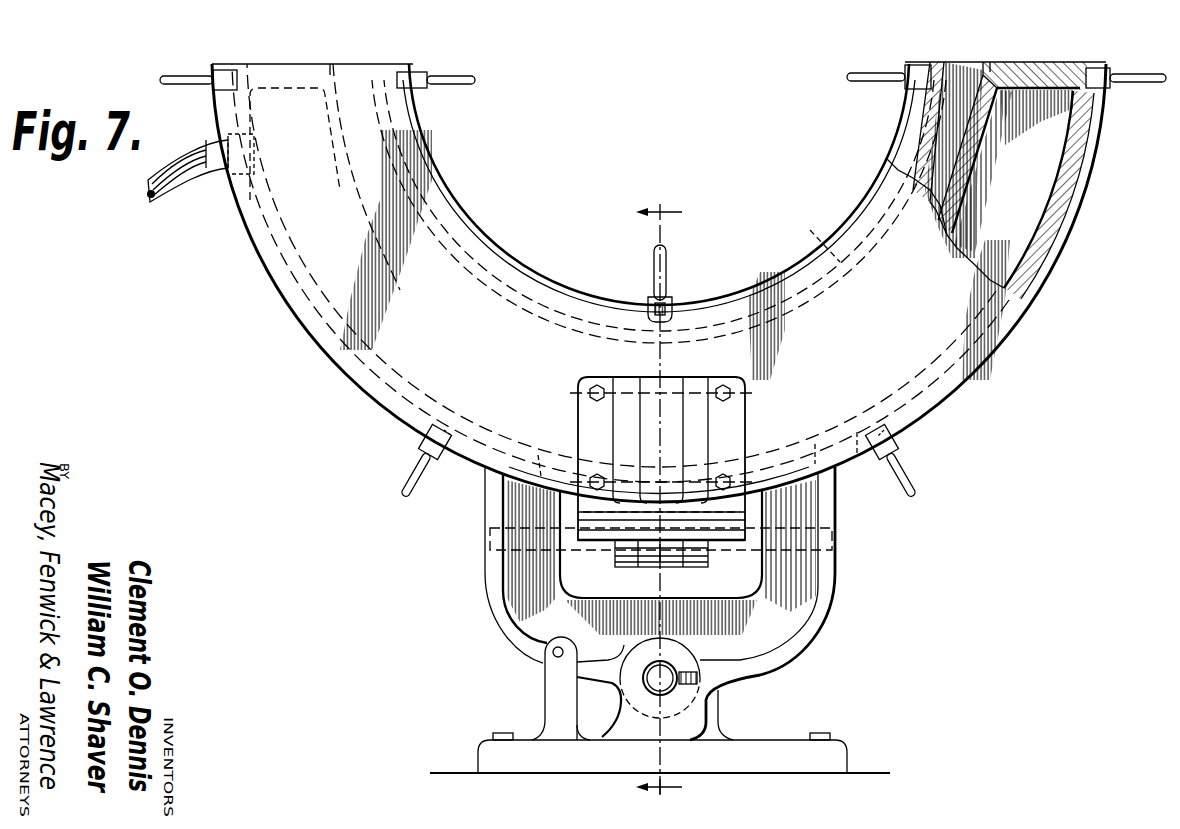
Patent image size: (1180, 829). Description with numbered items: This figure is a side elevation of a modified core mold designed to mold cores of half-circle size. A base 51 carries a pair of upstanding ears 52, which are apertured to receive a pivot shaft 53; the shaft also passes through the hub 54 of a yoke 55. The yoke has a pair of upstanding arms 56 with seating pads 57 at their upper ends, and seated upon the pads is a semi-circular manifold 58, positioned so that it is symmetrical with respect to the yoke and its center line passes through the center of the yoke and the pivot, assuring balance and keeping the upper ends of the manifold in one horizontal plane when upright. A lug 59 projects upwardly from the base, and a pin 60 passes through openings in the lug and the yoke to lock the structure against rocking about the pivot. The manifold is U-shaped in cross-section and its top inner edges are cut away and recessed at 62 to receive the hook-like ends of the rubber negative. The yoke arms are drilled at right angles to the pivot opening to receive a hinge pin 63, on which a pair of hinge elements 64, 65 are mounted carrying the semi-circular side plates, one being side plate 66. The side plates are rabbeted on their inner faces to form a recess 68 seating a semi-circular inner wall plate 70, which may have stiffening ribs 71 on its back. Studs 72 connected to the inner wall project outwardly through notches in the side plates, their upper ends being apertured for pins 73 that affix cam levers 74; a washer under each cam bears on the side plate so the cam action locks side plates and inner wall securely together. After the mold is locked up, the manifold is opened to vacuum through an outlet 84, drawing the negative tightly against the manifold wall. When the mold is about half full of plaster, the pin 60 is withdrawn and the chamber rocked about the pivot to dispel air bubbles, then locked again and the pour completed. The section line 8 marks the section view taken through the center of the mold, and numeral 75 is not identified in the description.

The section line 8- 8 is at (648, 501).
The base 51 is at (786, 736).
The upstanding ears 52 is at (700, 725).
The pivot shaft 53 is at (645, 666).
The hub 54 is at (620, 712).
The yoke 55 is at (838, 619).
The upstanding arms 56 is at (488, 497).
The seating pads 57 is at (536, 458).
The semi-circular manifold 58 is at (1040, 240).
The lug 59 is at (552, 700).
The pin 60 is at (560, 645).
The recess 62 is at (331, 66).
The hinge pin 63 is at (834, 540).
The hinge element 64 is at (744, 420).
The hinge element 65 is at (668, 562).
The side plate 66 is at (778, 288).
The recess 68 is at (816, 236).
The inner wall plate 70 is at (928, 118).
The stiffening ribs 71 is at (905, 142).
The studs 72 is at (225, 71).
The pins 73 is at (455, 432).
The cam levers 74 is at (180, 76).
The flange 75 is at (906, 168).
The outlet 84 is at (204, 188).